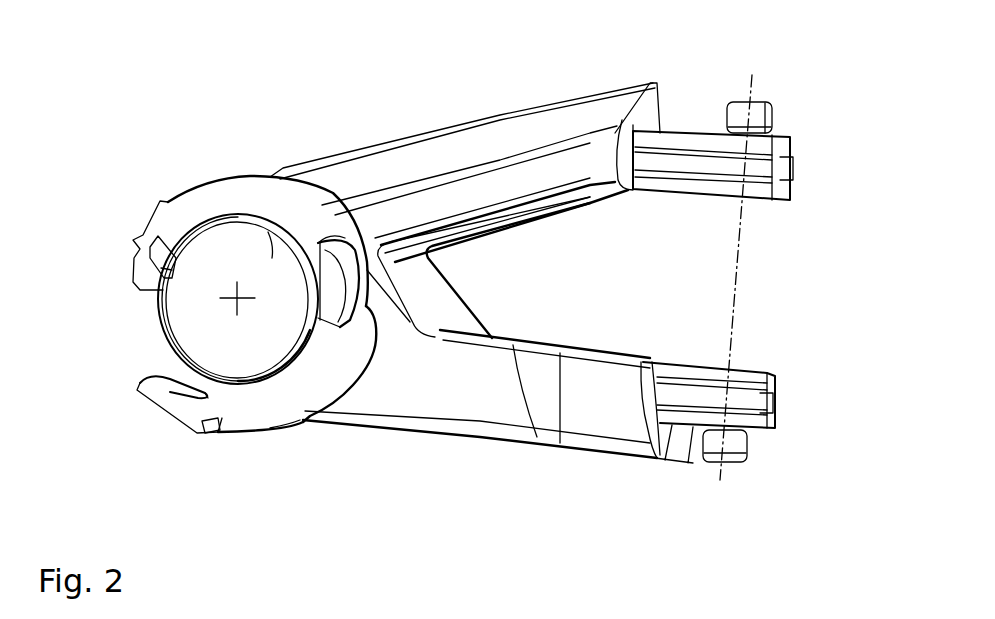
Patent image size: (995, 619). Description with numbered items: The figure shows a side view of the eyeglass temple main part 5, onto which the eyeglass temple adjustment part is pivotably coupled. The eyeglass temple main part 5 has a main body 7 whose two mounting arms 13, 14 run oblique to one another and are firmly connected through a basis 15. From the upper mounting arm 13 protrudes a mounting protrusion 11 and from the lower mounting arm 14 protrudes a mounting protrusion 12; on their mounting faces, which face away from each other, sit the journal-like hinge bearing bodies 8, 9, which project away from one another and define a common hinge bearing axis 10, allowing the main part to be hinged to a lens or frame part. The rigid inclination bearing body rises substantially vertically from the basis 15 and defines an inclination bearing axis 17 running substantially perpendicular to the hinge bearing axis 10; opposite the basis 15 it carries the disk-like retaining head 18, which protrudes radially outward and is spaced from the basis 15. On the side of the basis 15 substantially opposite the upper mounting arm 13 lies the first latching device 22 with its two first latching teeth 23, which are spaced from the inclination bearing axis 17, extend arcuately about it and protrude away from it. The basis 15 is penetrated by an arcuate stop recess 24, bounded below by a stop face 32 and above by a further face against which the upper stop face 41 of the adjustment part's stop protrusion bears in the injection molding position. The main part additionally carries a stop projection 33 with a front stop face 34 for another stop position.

The eyeglass temple main part 5 is at (418, 446).
The main body 7 is at (512, 446).
The hinge bearing body 8 is at (760, 119).
The hinge bearing body 9 is at (733, 444).
The hinge bearing axis 10 is at (730, 289).
The mounting protrusion 11 is at (689, 136).
The mounting protrusion 12 is at (705, 365).
The mounting arm 13 is at (473, 135).
The mounting arm 14 is at (625, 423).
The basis 15 is at (262, 412).
The inclination bearing axis 17 is at (244, 308).
The retaining head 18 is at (175, 303).
The first latching device 22 is at (131, 236).
The first latching teeth 23 is at (133, 258).
The stop recess 24 is at (345, 238).
The stop face 32 is at (367, 322).
The stop projection 33 is at (163, 400).
The front stop face 34 is at (145, 378).
The upper stop face 41 is at (274, 250).